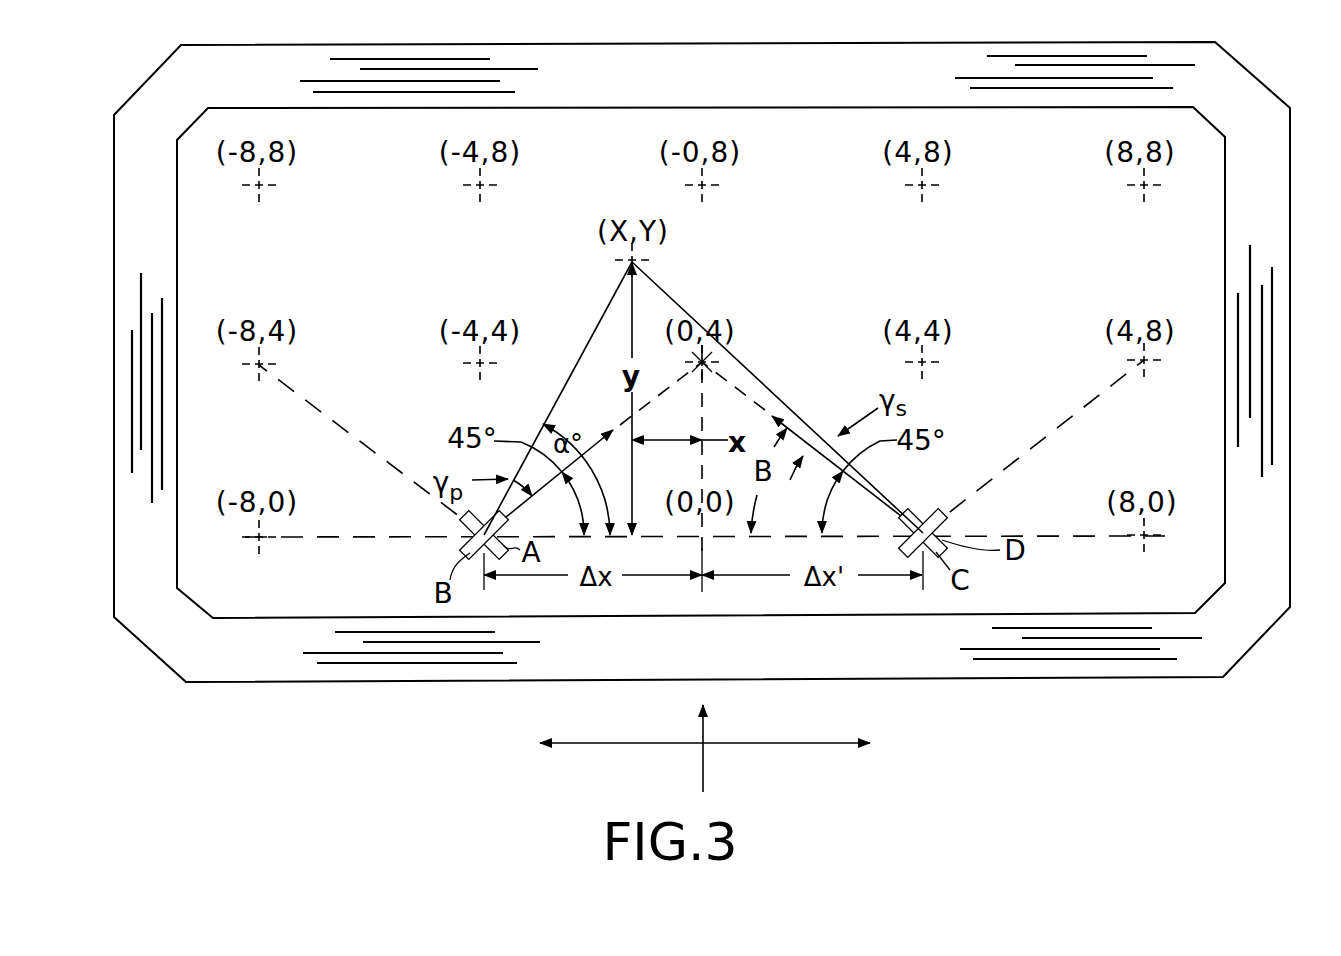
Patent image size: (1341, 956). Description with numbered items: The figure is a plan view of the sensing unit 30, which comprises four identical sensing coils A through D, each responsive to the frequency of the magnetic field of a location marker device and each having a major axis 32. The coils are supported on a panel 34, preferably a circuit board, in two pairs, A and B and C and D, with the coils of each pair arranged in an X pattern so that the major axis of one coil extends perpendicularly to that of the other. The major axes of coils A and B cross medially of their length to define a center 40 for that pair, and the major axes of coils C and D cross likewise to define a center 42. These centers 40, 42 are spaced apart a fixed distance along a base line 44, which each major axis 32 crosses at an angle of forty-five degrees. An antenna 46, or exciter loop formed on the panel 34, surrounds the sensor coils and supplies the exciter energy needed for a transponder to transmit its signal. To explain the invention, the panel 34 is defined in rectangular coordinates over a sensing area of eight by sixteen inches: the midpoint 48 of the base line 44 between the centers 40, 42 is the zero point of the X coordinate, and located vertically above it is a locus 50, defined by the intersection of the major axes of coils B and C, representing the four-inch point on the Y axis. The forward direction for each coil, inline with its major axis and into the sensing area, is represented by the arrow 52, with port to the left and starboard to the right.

The sensing unit 30 is at (845, 44).
The major axis 32 is at (297, 396).
The panel 34 is at (1001, 255).
The center 40 is at (466, 527).
The center 42 is at (925, 524).
The base line 44 is at (776, 538).
The antenna 46 is at (1290, 366).
The midpoint 48 is at (699, 541).
The locus 50 is at (712, 358).
The arrow 52 is at (703, 765).